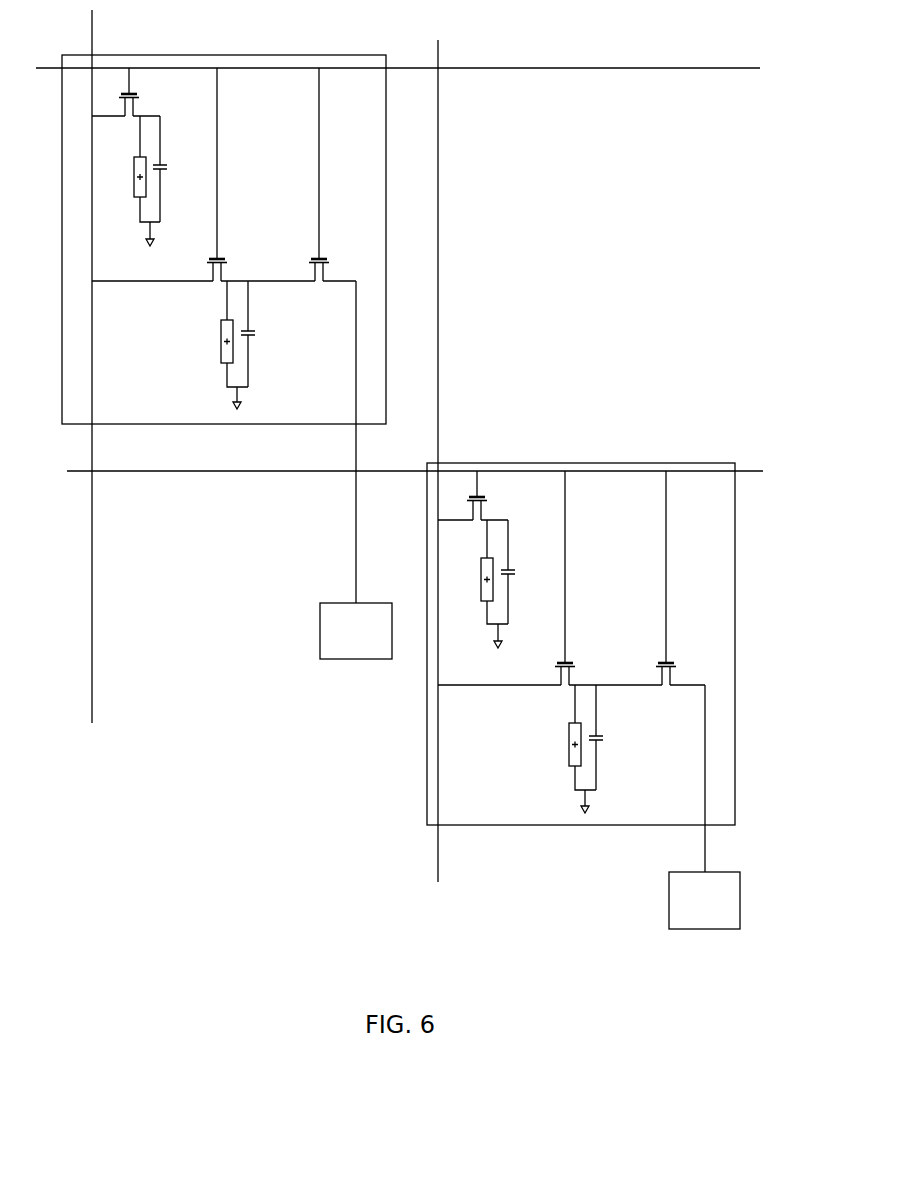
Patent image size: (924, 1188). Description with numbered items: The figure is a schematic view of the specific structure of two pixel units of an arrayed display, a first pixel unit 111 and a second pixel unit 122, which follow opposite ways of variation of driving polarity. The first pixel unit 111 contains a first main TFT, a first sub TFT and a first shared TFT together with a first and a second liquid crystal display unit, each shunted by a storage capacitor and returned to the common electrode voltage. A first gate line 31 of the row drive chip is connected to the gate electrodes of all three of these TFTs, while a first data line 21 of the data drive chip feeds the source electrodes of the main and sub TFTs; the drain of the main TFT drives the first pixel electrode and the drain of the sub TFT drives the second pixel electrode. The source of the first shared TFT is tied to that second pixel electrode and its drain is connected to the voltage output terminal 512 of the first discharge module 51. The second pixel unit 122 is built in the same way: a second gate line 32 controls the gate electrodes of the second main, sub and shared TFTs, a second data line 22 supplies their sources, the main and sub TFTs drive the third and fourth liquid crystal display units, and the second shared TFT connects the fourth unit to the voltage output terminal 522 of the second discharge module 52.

The first data line 21 is at (102, 365).
The second data line 22 is at (452, 458).
The first gate line 31 is at (398, 61).
The second gate line 32 is at (415, 460).
The first pixel unit 111 is at (273, 55).
The second pixel unit 122 is at (603, 463).
The first discharge module 51 is at (368, 603).
The voltage output terminal 512 is at (349, 442).
The second discharge module 52 is at (715, 872).
The voltage output terminal 522 is at (699, 778).